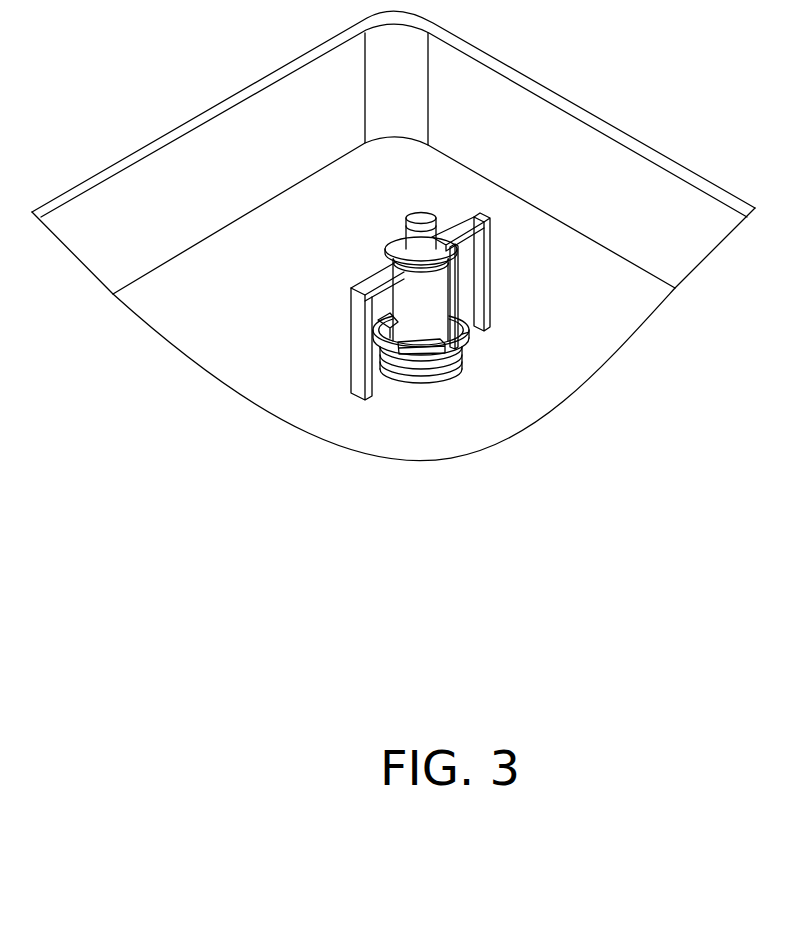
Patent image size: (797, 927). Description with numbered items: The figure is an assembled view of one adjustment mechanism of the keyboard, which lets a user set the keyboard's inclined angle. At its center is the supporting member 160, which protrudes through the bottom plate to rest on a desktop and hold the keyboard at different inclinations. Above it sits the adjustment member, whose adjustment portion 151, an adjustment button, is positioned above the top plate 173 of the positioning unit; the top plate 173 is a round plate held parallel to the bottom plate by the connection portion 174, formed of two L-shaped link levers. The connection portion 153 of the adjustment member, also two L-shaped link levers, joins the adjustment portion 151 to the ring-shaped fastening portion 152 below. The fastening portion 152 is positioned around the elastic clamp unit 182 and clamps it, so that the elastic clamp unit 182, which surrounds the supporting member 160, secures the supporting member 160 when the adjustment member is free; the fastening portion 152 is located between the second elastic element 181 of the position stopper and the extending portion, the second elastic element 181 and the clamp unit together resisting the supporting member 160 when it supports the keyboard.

The adjustment portion 151 is at (422, 215).
The fastening portion 152 is at (400, 357).
The connection portion 153 is at (457, 277).
The supporting member 160 is at (432, 302).
The top plate 173 is at (397, 247).
The connection portion 174 is at (355, 370).
The second elastic element 181 is at (465, 347).
The elastic clamp unit 182 is at (423, 345).